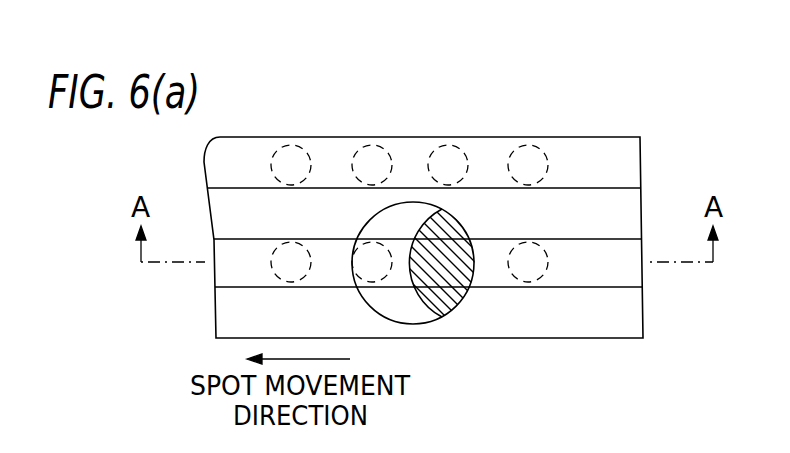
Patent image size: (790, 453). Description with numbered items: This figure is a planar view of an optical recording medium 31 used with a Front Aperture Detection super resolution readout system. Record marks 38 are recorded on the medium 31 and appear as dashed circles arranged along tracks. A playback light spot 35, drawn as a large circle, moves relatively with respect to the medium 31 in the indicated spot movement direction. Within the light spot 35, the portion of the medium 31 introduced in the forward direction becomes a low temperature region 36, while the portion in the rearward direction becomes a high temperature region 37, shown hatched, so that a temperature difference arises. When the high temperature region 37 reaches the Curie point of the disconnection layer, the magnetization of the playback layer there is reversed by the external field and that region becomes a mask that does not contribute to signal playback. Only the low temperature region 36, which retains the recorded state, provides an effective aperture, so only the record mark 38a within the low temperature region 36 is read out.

The medium 31 is at (622, 137).
The playback light spot 35 is at (362, 226).
The low temperature region 36 is at (415, 313).
The high temperature region 37 is at (453, 278).
The record marks 38 is at (360, 210).
The record mark 38a is at (356, 290).